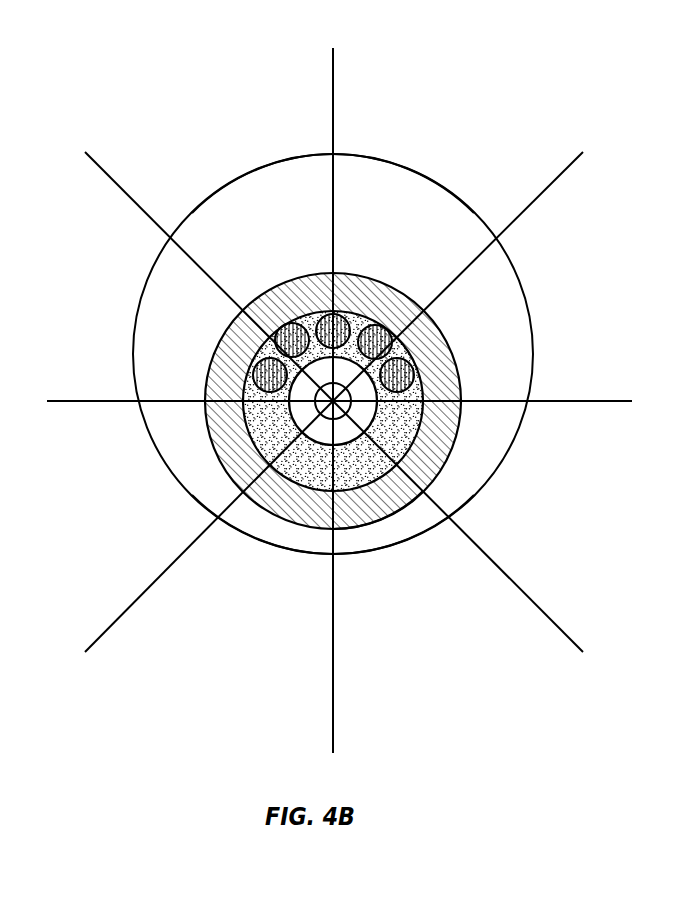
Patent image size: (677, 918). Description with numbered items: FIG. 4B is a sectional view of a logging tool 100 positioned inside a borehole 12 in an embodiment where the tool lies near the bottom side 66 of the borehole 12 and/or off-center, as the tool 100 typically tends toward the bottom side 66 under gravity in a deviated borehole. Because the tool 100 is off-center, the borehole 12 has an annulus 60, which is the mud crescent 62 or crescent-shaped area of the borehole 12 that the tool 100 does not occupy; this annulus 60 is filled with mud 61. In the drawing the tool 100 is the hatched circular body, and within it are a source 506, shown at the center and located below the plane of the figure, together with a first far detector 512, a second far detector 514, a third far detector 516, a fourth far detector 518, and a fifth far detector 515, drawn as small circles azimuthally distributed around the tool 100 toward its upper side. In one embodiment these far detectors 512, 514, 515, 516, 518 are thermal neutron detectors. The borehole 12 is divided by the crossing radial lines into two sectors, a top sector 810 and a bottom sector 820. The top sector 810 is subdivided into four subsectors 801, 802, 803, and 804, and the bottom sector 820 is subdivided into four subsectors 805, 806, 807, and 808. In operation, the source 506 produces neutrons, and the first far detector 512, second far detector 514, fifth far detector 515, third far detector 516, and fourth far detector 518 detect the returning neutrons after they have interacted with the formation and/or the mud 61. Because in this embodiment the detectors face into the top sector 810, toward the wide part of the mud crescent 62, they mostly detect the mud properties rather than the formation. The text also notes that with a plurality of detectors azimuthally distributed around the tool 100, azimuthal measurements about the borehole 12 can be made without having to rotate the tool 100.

The borehole 12 is at (168, 473).
The annulus 60 is at (142, 322).
The mud 61 is at (455, 207).
The mud crescent 62 is at (263, 172).
The bottom side 66 is at (337, 557).
The tool 100 is at (370, 530).
The source 506 is at (338, 400).
The first far detector 512 is at (233, 337).
The second far detector 514 is at (292, 321).
The fifth far detector 515 is at (328, 315).
The third far detector 516 is at (390, 315).
The fourth far detector 518 is at (432, 333).
The subsector 801 is at (147, 392).
The subsector 802 is at (215, 208).
The subsector 803 is at (347, 160).
The subsector 804 is at (528, 392).
The subsector 805 is at (497, 458).
The subsector 806 is at (395, 535).
The subsector 807 is at (255, 540).
The subsector 808 is at (165, 430).
The top sector 810 is at (311, 101).
The bottom sector 820 is at (310, 660).